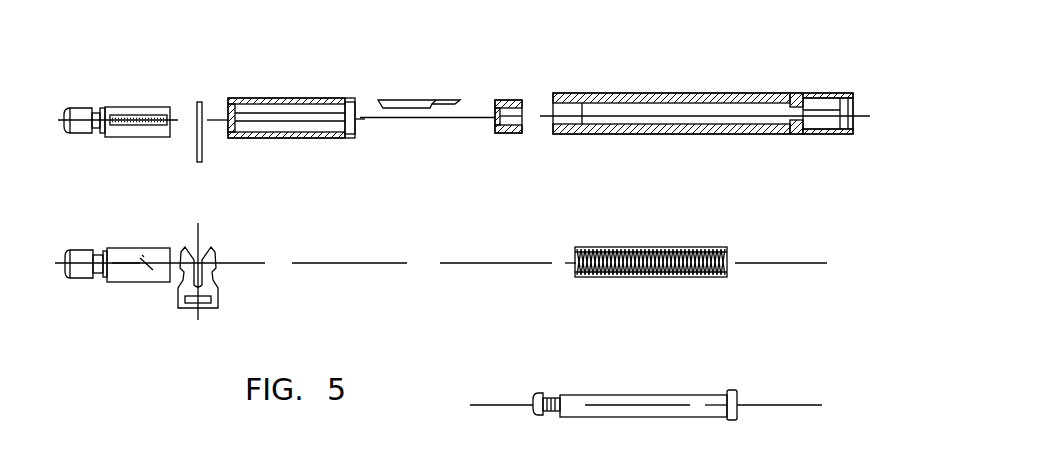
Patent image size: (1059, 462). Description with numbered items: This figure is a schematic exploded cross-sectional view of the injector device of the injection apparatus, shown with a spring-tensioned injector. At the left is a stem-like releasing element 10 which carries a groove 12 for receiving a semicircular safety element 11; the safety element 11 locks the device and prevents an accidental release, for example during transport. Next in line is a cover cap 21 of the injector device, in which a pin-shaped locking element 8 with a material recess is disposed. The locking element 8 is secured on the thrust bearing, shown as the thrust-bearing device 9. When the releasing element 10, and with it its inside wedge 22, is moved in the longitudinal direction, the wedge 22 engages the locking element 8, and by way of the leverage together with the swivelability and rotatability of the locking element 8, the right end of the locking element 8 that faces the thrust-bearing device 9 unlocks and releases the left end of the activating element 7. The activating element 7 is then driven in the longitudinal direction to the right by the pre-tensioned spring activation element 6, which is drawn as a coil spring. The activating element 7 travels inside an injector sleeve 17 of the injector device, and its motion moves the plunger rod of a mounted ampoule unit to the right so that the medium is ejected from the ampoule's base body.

The spring activation element 6 is at (660, 247).
The activating element 7 is at (628, 402).
The locking element 8 is at (415, 100).
The thrust-bearing device 9 is at (505, 113).
The releasing element 10 is at (135, 113).
The safety element 11 is at (200, 110).
The groove 12 is at (98, 109).
The injector sleeve 17 is at (683, 110).
The cover cap 21 is at (290, 118).
The inside wedge 22 is at (138, 258).